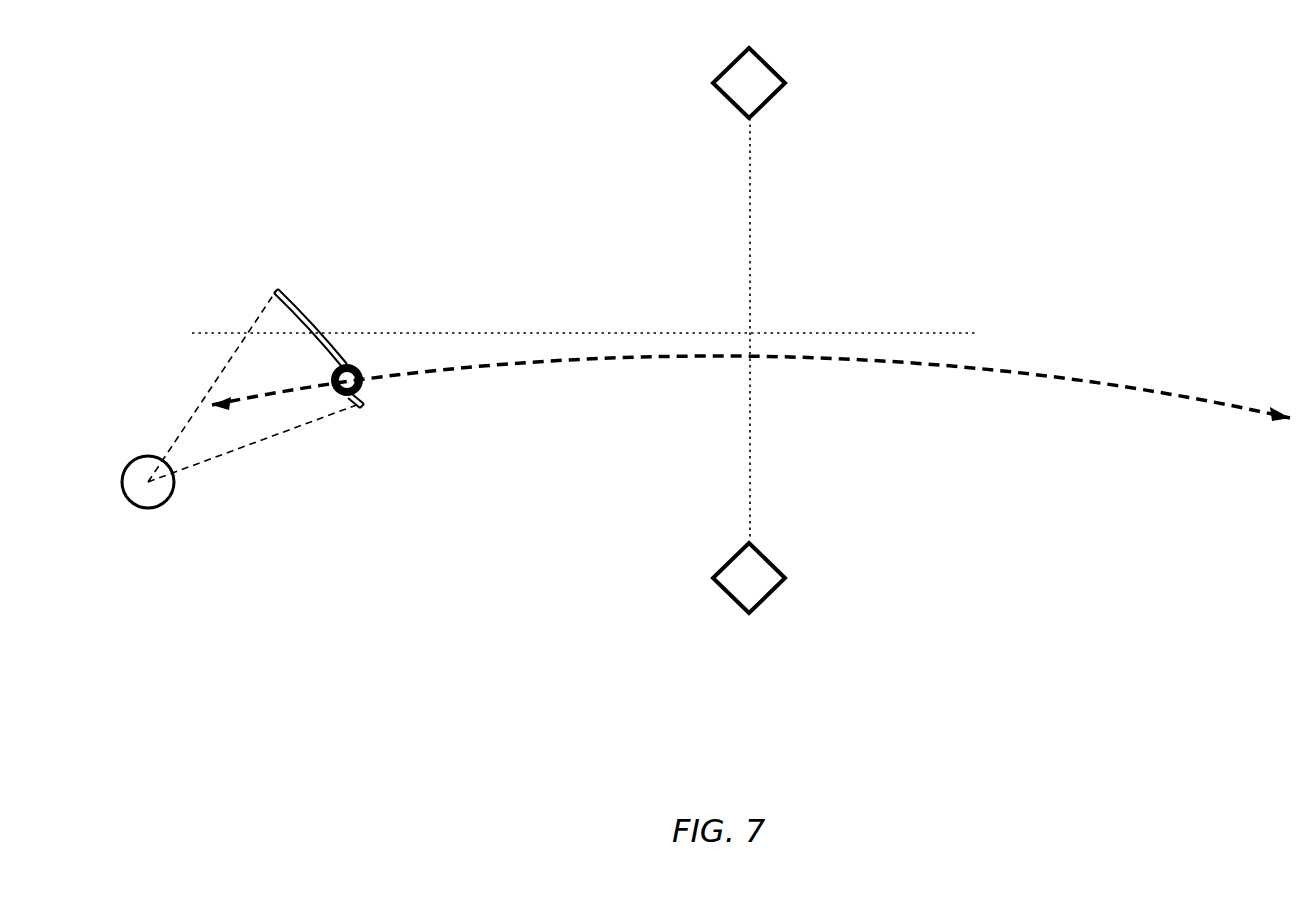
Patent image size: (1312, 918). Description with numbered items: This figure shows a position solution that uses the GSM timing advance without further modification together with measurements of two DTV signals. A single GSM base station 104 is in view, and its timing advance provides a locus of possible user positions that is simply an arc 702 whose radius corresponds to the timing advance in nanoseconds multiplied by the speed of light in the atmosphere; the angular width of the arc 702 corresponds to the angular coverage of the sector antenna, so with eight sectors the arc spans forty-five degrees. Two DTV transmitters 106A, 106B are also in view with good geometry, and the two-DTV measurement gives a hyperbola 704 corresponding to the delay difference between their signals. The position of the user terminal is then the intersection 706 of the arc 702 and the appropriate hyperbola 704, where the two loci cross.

The GSM base station 104 is at (148, 508).
The DTV transmitter 106A is at (714, 82).
The DTV transmitter 106B is at (785, 578).
The arc 702 is at (298, 301).
The hyperbola 704 is at (632, 360).
The intersection 706 is at (365, 387).